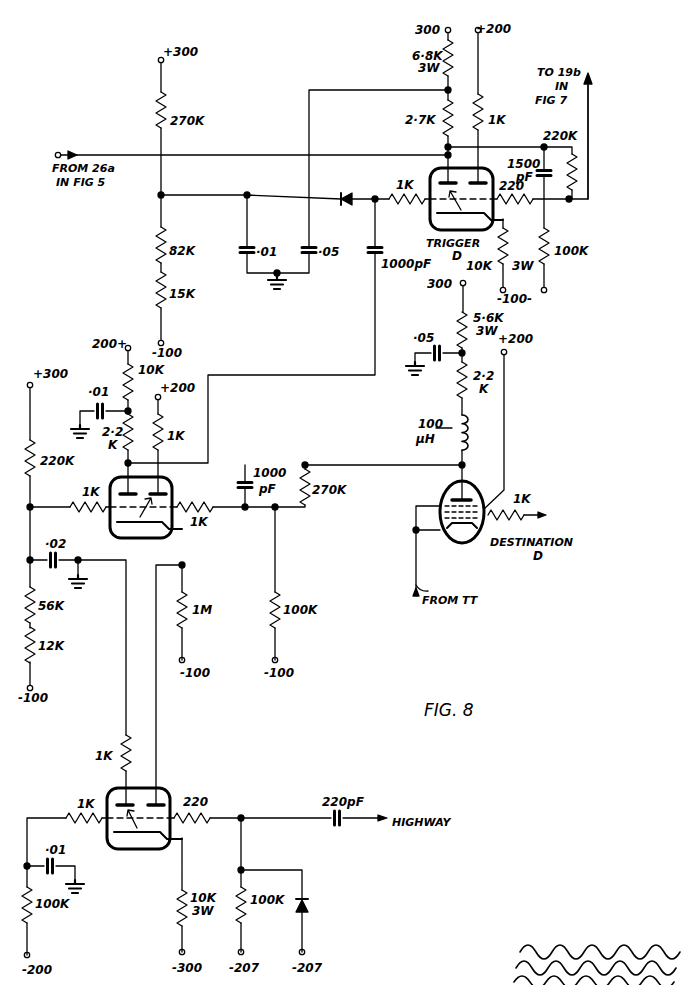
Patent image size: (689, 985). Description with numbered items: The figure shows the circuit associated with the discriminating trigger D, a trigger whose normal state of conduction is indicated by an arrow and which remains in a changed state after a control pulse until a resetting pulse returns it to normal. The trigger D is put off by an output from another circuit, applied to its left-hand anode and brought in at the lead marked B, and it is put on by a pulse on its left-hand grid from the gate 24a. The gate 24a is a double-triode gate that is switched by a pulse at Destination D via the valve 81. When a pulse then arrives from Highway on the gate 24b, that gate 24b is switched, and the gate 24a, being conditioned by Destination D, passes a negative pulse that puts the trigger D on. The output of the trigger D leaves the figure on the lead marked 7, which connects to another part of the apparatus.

The gate 24a is at (171, 481).
The gate 24b is at (168, 792).
The valve 81 is at (444, 494).
The terminal to 19b in FIG. 7 is at (595, 133).
The input terminal B from 26a in FIG. 5 B is at (251, 147).